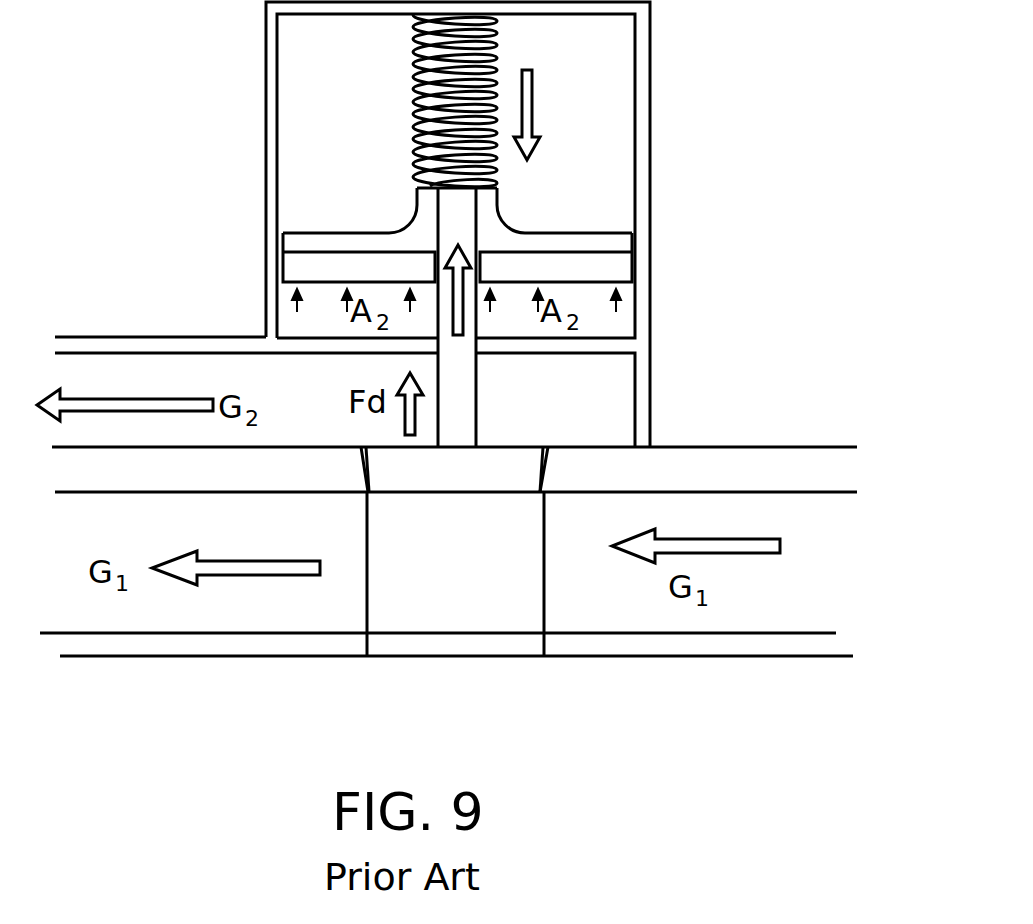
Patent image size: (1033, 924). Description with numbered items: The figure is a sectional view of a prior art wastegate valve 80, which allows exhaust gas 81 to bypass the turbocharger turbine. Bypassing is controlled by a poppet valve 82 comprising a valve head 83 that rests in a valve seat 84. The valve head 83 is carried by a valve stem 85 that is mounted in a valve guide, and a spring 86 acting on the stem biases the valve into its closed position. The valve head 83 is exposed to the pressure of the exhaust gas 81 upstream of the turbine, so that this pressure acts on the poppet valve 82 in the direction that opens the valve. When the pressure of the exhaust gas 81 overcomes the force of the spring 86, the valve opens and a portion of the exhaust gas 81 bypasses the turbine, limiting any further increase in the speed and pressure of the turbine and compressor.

The wastegate valve 80 is at (742, 180).
The exhaust gas 81 is at (735, 538).
The poppet valve 82 is at (495, 395).
The valve head 83 is at (495, 445).
The valve seat 84 is at (548, 447).
The valve stem 85 is at (438, 357).
The spring 86 is at (415, 148).